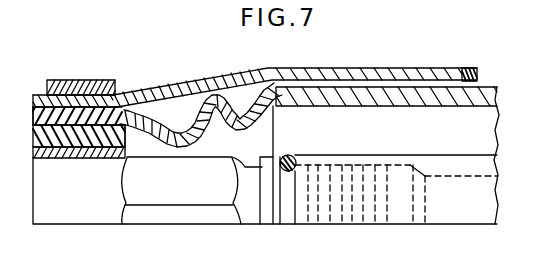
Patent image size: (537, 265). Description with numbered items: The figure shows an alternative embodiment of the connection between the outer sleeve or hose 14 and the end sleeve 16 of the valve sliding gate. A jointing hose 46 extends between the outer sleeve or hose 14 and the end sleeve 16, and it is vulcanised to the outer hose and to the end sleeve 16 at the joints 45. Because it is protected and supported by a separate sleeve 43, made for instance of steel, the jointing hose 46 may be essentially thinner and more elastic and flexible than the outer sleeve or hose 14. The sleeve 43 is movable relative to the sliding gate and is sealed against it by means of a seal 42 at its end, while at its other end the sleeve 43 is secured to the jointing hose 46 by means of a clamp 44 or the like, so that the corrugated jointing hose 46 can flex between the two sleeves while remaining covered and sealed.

The outer sleeve or hose 14 is at (63, 150).
The end sleeve 16 is at (302, 106).
The seal 42 is at (478, 72).
The sleeve 43 is at (272, 68).
The clamp 44 is at (103, 81).
The vulcanised joint 45 is at (137, 130).
The jointing hose 46 is at (205, 96).